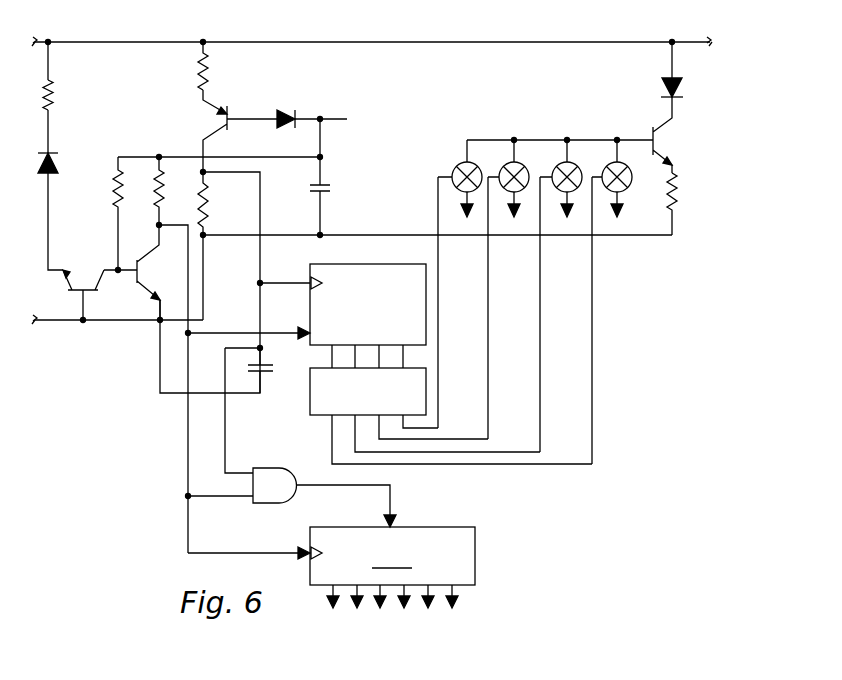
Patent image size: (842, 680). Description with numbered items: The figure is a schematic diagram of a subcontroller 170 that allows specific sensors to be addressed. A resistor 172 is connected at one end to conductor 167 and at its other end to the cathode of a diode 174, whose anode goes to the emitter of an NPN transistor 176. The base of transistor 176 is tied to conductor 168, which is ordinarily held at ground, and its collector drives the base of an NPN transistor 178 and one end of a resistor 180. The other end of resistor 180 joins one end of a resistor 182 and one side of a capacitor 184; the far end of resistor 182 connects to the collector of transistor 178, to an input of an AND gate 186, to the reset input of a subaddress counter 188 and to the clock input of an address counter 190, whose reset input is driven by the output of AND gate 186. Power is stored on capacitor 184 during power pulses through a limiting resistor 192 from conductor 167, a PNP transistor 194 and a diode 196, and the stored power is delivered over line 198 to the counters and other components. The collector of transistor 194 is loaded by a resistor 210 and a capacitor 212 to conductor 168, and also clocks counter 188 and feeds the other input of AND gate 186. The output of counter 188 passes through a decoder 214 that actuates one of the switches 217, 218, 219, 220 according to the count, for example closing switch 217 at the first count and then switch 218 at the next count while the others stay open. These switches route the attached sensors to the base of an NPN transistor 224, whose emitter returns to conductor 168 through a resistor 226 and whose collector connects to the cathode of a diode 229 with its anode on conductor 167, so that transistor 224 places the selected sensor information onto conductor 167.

The conductor 167 is at (266, 42).
The conductor 168 is at (155, 320).
The subcontroller 170 is at (544, 486).
The resistor 172 is at (52, 92).
The diode 174 is at (56, 158).
The NPN transistor 176 is at (90, 282).
The NPN transistor 178 is at (135, 262).
The resistor 180 is at (112, 188).
The resistor 182 is at (158, 182).
The capacitor 184 is at (327, 186).
The AND gate 186 is at (266, 504).
The subaddress counter 188 is at (368, 304).
The address counter 190 is at (392, 556).
The resistor 192 is at (208, 72).
The PNP transistor 194 is at (222, 122).
The diode 196 is at (285, 110).
The line 198 is at (338, 118).
The resistor 210 is at (240, 215).
The capacitor 212 is at (265, 373).
The decoder 214 is at (368, 391).
The switch 217 is at (456, 164).
The switch 218 is at (503, 164).
The switch 219 is at (556, 164).
The switch 220 is at (606, 164).
The NPN transistor 224 is at (660, 140).
The resistor 226 is at (680, 192).
The diode 229 is at (660, 90).